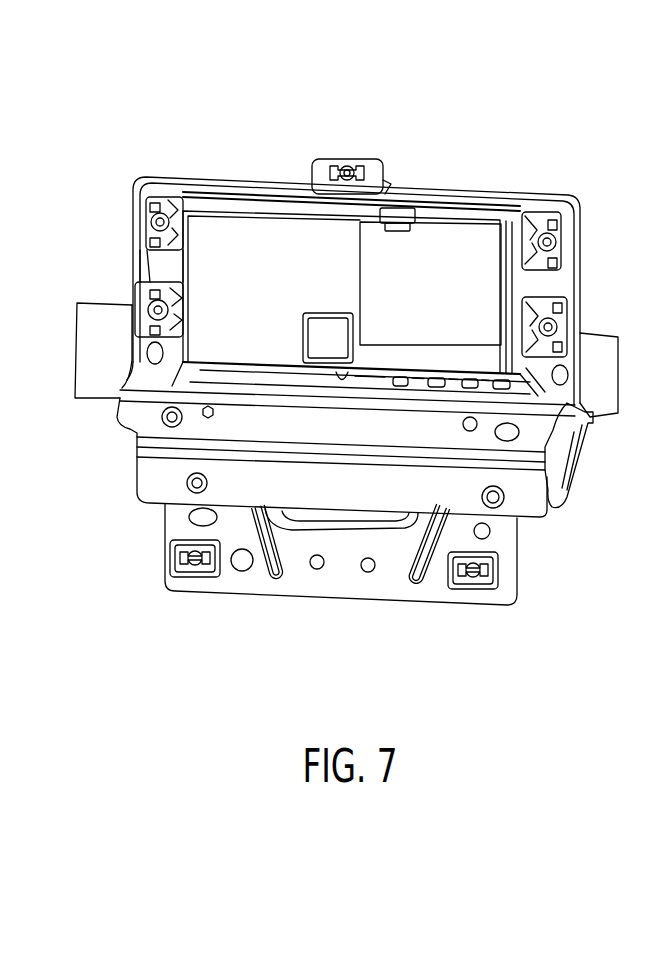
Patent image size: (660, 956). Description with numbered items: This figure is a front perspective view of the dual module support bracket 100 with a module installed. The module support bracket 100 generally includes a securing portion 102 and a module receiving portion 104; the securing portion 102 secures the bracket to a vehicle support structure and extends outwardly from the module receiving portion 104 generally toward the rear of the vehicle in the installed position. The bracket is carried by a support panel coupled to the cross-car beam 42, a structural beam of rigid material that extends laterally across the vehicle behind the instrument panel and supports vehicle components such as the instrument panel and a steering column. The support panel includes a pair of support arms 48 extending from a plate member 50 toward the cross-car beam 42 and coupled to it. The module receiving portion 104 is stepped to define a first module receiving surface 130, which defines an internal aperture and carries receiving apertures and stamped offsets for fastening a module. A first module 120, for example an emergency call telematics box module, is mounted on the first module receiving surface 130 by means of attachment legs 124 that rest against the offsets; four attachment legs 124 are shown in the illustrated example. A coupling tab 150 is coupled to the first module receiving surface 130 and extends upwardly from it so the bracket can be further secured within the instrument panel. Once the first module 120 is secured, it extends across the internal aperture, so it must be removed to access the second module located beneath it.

The cross-car beam 42 is at (612, 353).
The support arms 48 is at (577, 435).
The plate member 50 is at (348, 587).
The module support bracket 100 is at (130, 427).
The securing portion 102 is at (462, 515).
The module receiving portion 104 is at (574, 194).
The first module 120 is at (442, 230).
The attachment legs 124 is at (153, 210).
The first module receiving surface 130 is at (150, 267).
The coupling tab 150 is at (323, 167).